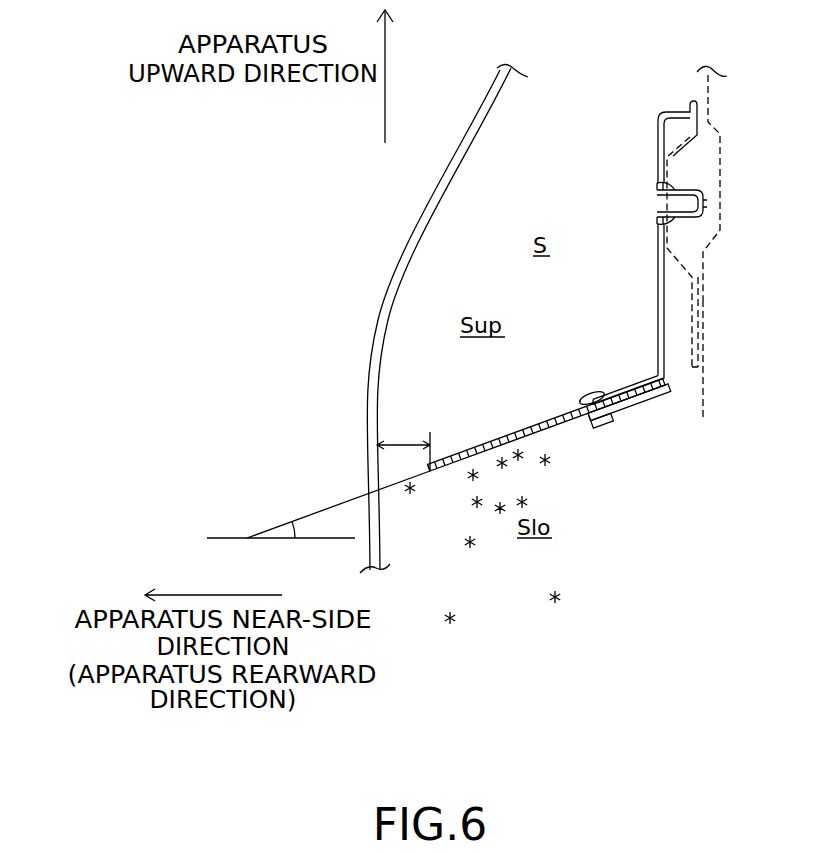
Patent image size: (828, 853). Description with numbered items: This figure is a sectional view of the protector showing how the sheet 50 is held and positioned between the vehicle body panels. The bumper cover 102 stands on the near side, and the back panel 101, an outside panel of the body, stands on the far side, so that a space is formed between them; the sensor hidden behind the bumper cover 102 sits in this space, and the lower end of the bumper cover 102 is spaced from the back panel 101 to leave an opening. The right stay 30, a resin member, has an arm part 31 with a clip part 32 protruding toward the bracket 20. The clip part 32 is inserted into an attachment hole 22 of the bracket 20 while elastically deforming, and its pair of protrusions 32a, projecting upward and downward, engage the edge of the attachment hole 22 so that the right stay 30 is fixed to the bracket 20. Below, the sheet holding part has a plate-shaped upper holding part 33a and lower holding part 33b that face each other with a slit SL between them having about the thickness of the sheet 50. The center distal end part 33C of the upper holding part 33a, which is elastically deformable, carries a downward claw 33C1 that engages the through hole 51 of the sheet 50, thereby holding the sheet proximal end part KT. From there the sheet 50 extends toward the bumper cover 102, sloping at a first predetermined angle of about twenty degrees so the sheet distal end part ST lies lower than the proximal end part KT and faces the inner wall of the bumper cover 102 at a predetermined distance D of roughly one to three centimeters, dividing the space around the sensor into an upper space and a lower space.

The bumper cover 102 is at (402, 241).
The right stay 30 is at (620, 148).
The attachment hole 22 is at (660, 203).
The clip part 32 is at (708, 203).
The protrusions 32a is at (670, 182).
The arm part 31 is at (657, 285).
The bracket 20 is at (698, 318).
The back panel 101 is at (703, 417).
The upper holding part 33a is at (648, 372).
The lower holding part 33b is at (630, 408).
The center distal end part 33C is at (607, 392).
The claw 33C1 is at (606, 418).
The through hole 51 is at (580, 397).
The sheet 50 is at (522, 430).
The clearance SL is at (678, 381).
The sheet proximal end part KT is at (665, 388).
The sheet distal end part ST is at (430, 468).
The predetermined distance D is at (403, 445).